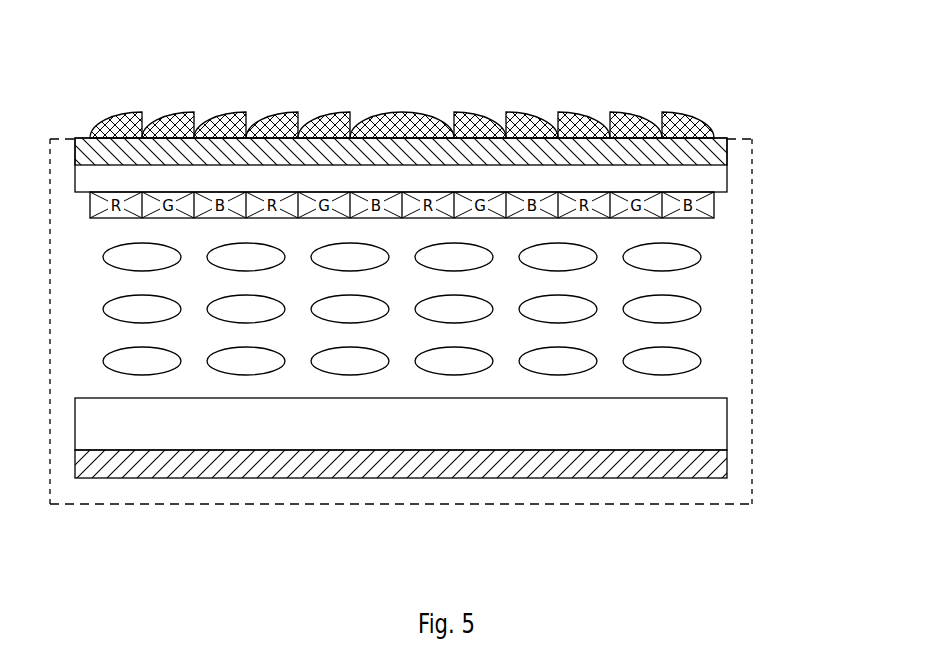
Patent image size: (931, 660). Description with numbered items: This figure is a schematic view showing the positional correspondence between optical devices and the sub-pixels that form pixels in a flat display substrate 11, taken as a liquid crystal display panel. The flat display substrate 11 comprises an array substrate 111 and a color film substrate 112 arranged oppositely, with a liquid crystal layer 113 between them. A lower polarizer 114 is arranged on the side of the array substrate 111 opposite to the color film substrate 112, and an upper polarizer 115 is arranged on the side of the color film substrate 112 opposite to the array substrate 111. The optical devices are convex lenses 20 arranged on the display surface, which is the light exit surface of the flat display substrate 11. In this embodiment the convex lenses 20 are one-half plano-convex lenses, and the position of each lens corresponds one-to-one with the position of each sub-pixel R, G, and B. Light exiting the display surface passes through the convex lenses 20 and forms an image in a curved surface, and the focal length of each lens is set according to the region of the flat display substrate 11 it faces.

The flat display substrate 11 is at (611, 504).
The array substrate 111 is at (143, 442).
The color film substrate 112 is at (543, 173).
The liquid crystal layer 113 is at (716, 322).
The lower polarizer 114 is at (310, 470).
The upper polarizer 115 is at (237, 118).
The convex lenses 20 is at (686, 118).